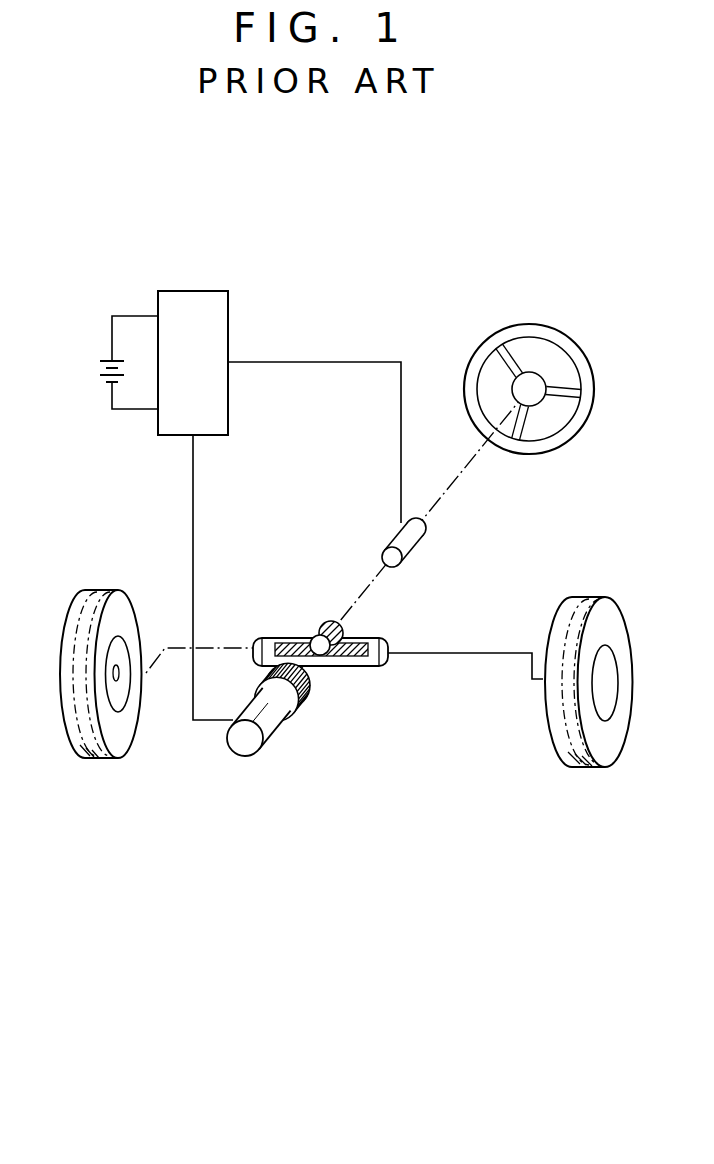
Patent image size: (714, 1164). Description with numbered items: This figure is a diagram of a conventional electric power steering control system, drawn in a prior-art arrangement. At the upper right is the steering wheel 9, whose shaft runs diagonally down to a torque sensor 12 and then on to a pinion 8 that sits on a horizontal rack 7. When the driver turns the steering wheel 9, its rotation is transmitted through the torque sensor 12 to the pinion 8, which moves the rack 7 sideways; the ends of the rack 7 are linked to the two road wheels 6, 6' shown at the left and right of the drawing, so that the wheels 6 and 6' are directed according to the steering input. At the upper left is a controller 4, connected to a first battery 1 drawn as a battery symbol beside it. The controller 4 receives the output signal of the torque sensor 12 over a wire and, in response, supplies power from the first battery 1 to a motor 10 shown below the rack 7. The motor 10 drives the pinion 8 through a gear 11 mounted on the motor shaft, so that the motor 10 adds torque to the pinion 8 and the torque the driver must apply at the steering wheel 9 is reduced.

The first battery 1 is at (97, 365).
The controller 4 is at (176, 294).
The wheel 6 is at (101, 707).
The wheel 6' is at (566, 700).
The rack 7 is at (264, 641).
The pinion 8 is at (320, 634).
The steering wheel 9 is at (485, 345).
The motor 10 is at (268, 744).
The gear 11 is at (305, 708).
The torque sensor 12 is at (393, 534).